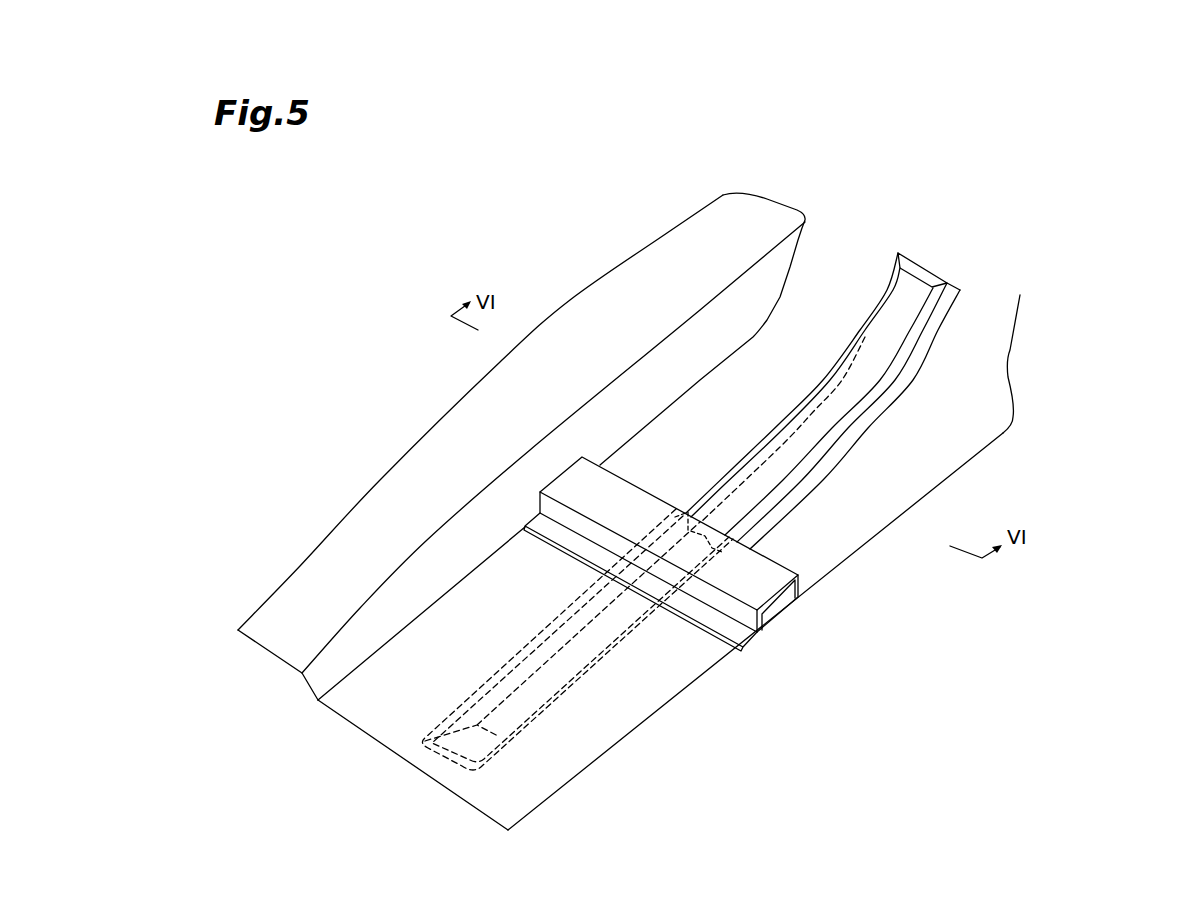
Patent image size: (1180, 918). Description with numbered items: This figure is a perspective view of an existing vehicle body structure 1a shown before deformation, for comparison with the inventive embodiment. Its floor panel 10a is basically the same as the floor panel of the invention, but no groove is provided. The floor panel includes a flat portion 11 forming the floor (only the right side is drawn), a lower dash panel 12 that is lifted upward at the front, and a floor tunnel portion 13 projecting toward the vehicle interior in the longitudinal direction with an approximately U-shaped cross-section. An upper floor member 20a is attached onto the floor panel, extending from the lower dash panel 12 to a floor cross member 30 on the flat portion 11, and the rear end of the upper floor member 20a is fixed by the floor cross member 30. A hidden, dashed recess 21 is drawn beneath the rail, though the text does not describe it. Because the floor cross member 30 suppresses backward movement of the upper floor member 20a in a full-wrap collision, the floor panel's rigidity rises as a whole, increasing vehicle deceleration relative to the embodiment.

The vehicle body structure 1a is at (1062, 329).
The floor panel 10a is at (1018, 395).
The flat portion 11 is at (940, 450).
The lower dash panel 12 is at (830, 277).
The floor tunnel portion 13 is at (665, 258).
The upper floor member 20a is at (910, 298).
The groove (hidden recess under rail) 21 is at (593, 675).
The floor cross member 30 is at (777, 600).